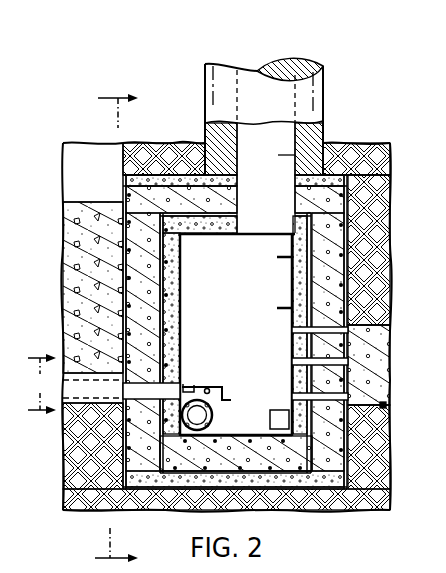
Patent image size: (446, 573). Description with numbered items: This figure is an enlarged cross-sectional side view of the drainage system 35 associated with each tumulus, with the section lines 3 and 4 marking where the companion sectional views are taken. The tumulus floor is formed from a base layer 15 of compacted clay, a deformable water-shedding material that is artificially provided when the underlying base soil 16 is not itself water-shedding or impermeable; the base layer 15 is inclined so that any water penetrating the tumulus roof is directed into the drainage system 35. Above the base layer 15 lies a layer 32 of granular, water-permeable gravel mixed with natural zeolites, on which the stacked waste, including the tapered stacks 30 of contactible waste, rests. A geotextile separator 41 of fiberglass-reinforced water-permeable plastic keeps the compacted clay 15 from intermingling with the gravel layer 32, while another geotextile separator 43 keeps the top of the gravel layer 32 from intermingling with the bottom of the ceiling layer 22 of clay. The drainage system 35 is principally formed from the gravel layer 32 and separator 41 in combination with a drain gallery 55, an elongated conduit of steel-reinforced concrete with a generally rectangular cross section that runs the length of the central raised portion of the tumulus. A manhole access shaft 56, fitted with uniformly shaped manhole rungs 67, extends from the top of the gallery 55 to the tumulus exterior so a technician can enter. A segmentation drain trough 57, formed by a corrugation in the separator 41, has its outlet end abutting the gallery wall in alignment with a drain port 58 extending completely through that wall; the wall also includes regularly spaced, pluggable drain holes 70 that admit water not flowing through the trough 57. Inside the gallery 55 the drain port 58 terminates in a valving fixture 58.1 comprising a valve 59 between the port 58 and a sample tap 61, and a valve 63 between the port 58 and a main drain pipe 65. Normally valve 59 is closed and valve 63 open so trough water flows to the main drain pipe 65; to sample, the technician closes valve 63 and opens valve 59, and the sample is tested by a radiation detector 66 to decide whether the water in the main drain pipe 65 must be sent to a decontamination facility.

The drainage system 35 is at (142, 70).
The manhole access shaft 56 is at (257, 88).
The tapered stacks of contactible waste 30 is at (88, 151).
The ceiling layer of clay 22 is at (176, 151).
The gravel and zeolite layer 32 is at (68, 258).
The geotextile separator 43 is at (385, 323).
The geotextile separator 41 is at (60, 386).
The segmentation drain trough 57 is at (81, 392).
The floor base layer 15 is at (60, 447).
The base soil 16 is at (84, 498).
The drain gallery 55 is at (292, 492).
The drain port 58 is at (106, 384).
The valving fixture 58.1 is at (200, 378).
The valve 63 is at (190, 383).
The valve 59 is at (208, 388).
The sample tap 61 is at (231, 399).
The main drain pipe 65 is at (213, 420).
The radiation detector 66 is at (281, 411).
The manhole rungs 67 is at (283, 257).
The drain holes 70 is at (291, 357).
The section line 3- 3 is at (125, 330).
The section line 4- 4 is at (37, 382).